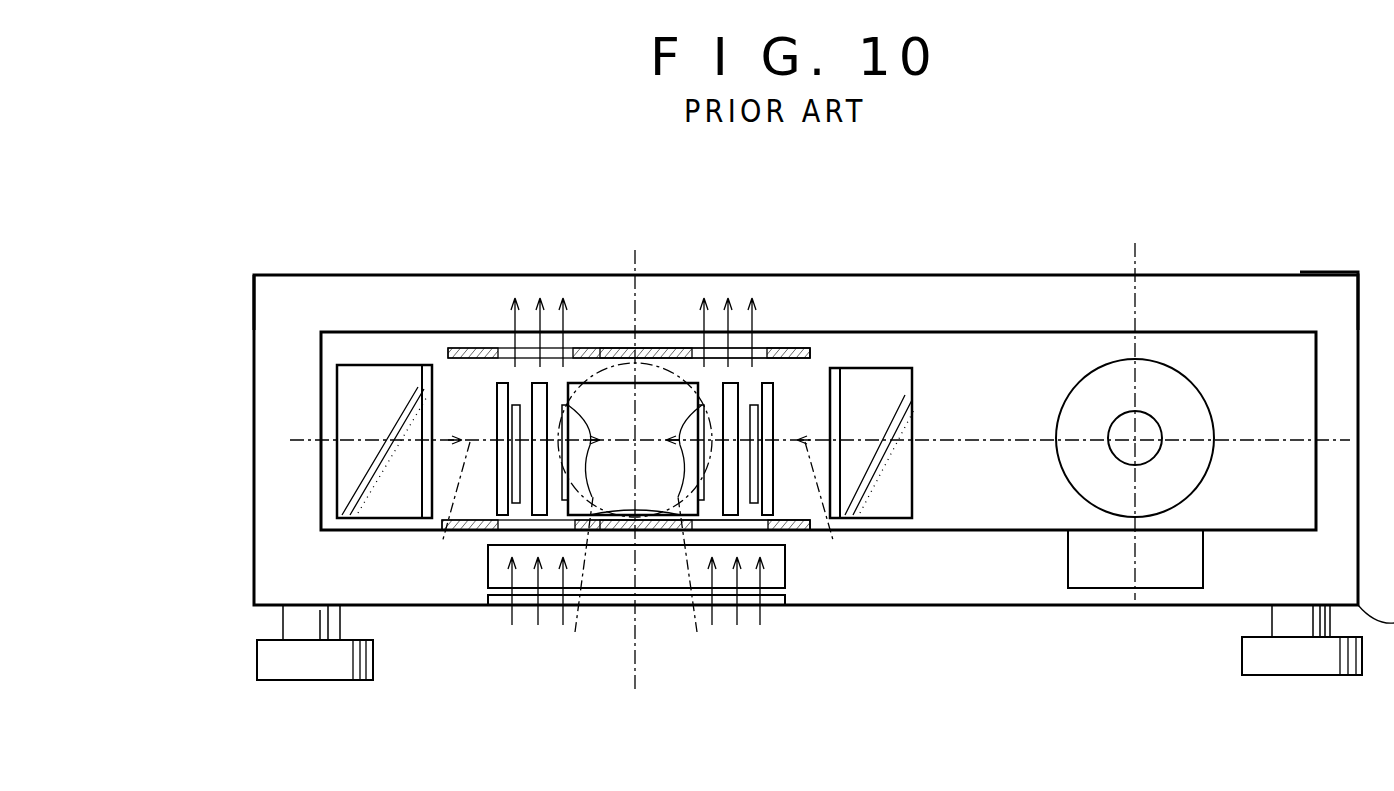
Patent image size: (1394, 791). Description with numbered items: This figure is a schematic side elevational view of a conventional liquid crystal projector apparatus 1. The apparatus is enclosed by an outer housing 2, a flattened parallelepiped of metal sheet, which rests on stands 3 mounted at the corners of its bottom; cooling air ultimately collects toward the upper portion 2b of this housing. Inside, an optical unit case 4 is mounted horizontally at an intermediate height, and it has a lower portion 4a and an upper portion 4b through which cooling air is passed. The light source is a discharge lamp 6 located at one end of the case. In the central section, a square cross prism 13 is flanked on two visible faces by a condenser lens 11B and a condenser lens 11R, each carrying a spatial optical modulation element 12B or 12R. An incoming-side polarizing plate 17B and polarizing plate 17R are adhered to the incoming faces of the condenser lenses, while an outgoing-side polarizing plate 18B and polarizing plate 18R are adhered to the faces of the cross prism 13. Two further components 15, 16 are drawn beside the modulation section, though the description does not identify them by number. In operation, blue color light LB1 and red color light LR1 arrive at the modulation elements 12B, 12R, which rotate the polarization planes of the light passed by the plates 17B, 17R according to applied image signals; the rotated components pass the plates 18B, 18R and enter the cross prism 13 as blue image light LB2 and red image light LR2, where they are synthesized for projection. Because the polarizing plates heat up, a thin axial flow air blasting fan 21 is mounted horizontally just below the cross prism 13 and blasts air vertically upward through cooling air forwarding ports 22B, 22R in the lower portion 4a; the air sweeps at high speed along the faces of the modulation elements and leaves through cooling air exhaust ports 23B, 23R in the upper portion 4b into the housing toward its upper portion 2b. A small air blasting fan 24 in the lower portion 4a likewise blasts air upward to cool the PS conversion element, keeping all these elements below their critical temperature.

The liquid crystal projector apparatus 1 is at (243, 275).
The outer housing 2 is at (1238, 268).
The upper portion of the outer housing 2b is at (1300, 272).
The stand 3 is at (303, 680).
The optical unit case 4 is at (1045, 328).
The lower portion of the optical unit case 4a is at (655, 520).
The upper portion of the optical unit case 4b is at (640, 363).
The discharge lamp 6 is at (1196, 405).
The condenser lens 11B is at (500, 418).
The condenser lens 11R is at (773, 413).
The spatial optical modulation element 12B is at (538, 392).
The spatial optical modulation element 12R is at (733, 392).
The cross prism 13 is at (613, 498).
The red mirror 15 is at (905, 468).
The blue mirror 16 is at (343, 398).
The polarizing plate 17B is at (513, 407).
The polarizing plate 17R is at (755, 407).
The polarizing plate 18B is at (565, 405).
The polarizing plate 18R is at (702, 405).
The air blasting fan 21 is at (671, 580).
The cooling air forwarding port 22B is at (510, 530).
The cooling air forwarding port 22R is at (758, 530).
The cooling air exhaust port 23B is at (528, 352).
The cooling air exhaust port 23R is at (740, 350).
The air blasting fan 24 is at (1180, 570).
The blue color light LB1 is at (437, 550).
The blue image light LB2 is at (559, 582).
The red color light LR1 is at (835, 540).
The red image light LR2 is at (708, 582).